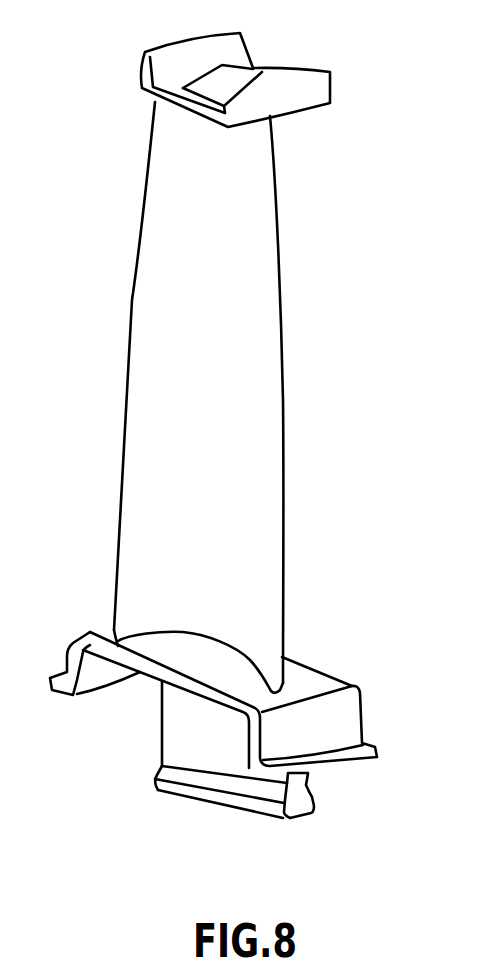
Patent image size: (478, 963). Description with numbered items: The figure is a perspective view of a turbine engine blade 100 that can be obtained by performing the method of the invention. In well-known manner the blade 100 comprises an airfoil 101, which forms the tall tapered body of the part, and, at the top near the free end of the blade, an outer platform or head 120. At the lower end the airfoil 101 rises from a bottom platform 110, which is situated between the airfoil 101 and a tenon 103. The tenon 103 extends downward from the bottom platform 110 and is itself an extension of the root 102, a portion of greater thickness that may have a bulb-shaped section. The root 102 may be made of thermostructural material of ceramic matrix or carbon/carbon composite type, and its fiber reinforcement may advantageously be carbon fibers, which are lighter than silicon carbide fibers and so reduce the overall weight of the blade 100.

The turbine engine blade 100 is at (96, 392).
The airfoil 101 is at (270, 376).
The root 102 is at (332, 803).
The tenon 103 is at (190, 740).
The bottom platform 110 is at (312, 683).
The outer platform or head 120 is at (137, 45).